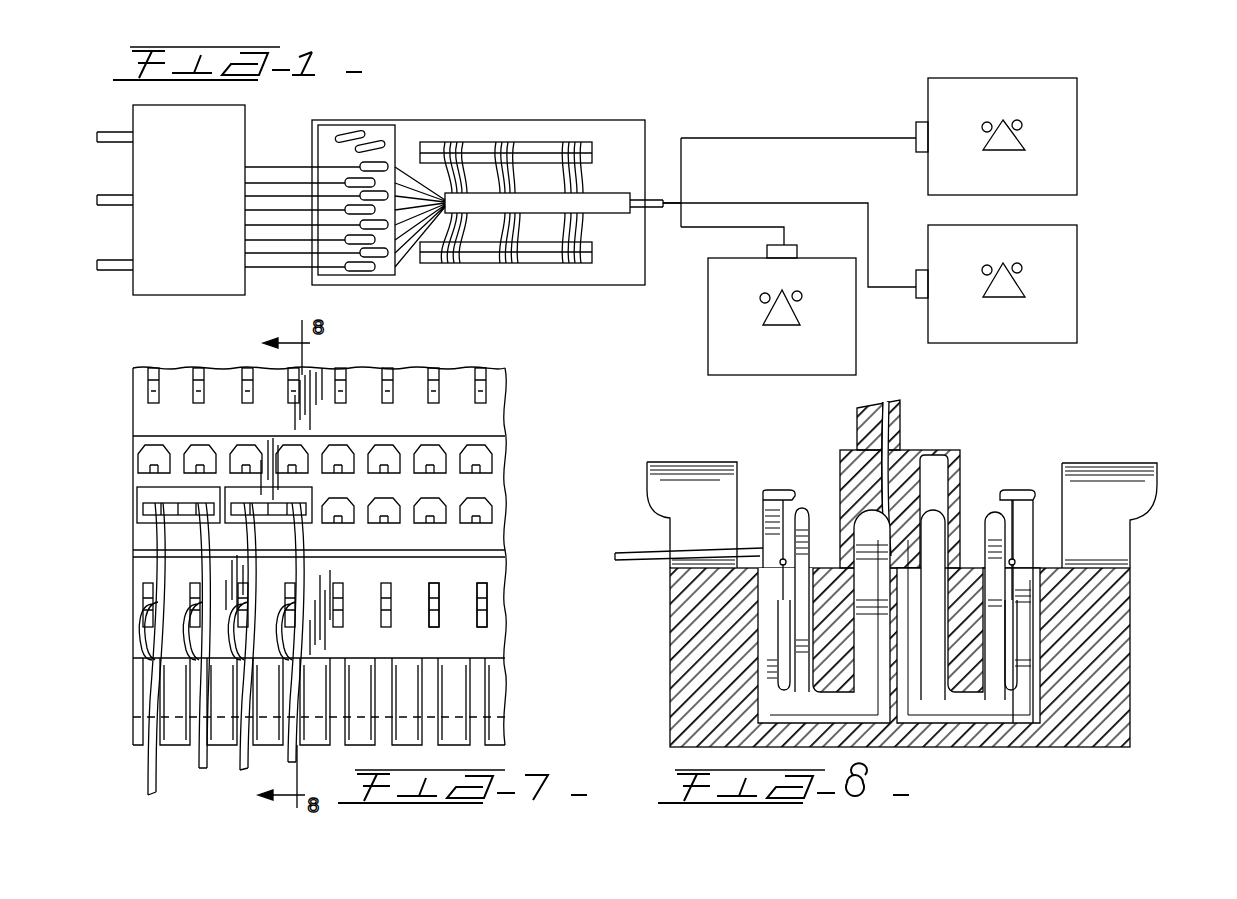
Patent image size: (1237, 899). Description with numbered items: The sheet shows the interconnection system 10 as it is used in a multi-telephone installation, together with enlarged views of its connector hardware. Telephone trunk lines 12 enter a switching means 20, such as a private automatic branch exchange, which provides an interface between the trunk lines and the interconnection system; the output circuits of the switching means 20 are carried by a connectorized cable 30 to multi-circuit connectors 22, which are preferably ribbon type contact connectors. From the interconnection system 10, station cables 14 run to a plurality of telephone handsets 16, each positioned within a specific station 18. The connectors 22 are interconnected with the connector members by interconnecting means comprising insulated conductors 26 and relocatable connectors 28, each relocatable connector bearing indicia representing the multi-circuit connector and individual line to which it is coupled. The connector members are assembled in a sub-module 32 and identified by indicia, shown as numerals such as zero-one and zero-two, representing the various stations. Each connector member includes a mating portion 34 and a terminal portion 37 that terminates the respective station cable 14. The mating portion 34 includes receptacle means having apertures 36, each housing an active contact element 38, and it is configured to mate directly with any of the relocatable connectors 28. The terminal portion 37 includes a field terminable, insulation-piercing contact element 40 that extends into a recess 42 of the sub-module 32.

In FIG. 1, the interconnection system 10 is at (607, 118).
In FIG. 1, the telephone trunk lines 12 is at (113, 265).
In FIG. 1, the station cables 14 is at (757, 227).
In FIG. 7, the station cables 14 is at (148, 651).
In FIG. 8, the station cables 14 is at (652, 545).
In FIG. 1, the telephone handsets 16 is at (1010, 151).
In FIG. 1, the station 18 is at (1068, 106).
In FIG. 1, the switching means 20 is at (195, 150).
In FIG. 1, the multi-circuit connectors 22 is at (372, 143).
In FIG. 7, the insulated conductors 26 is at (170, 567).
In FIG. 7, the relocatable connectors 28 is at (143, 505).
In FIG. 8, the relocatable connectors 28 is at (860, 420).
In FIG. 1, the connectorized cable 30 is at (298, 225).
In FIG. 7, the sub-module 32 is at (512, 690).
In FIG. 8, the sub-module 32 is at (1133, 611).
In FIG. 7, the mating portion 34 is at (490, 541).
In FIG. 8, the mating portion 34 is at (840, 445).
In FIG. 7, the apertures 36 is at (440, 457).
In FIG. 8, the apertures 36 is at (940, 457).
In FIG. 8, the terminal portion 37 is at (1016, 490).
In FIG. 7, the active contact element 38 is at (482, 512).
In FIG. 8, the active contact element 38 is at (866, 527).
In FIG. 7, the insulation-piercing contact element 40 is at (478, 612).
In FIG. 8, the insulation-piercing contact element 40 is at (770, 500).
In FIG. 7, the recess 42 is at (487, 579).
In FIG. 8, the recess 42 is at (1045, 568).